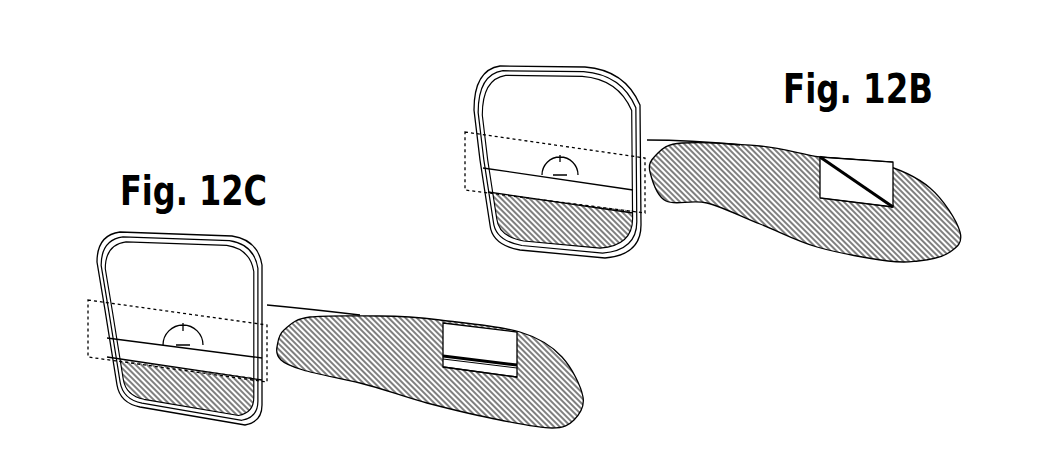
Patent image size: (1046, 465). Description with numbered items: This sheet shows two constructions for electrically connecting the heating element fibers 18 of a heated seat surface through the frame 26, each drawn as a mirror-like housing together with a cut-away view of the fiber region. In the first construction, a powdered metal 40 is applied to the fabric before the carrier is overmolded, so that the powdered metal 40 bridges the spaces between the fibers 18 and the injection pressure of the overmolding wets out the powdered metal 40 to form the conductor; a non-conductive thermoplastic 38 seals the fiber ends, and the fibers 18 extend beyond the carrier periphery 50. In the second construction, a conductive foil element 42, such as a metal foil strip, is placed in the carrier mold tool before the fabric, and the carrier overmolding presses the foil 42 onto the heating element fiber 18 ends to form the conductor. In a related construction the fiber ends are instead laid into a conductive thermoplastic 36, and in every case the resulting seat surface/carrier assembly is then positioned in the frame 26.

In FIG. 12C, the heating element fibers 18 is at (447, 342).
In FIG. 12B, the heating element fibers 18 is at (840, 155).
In FIG. 12C, the frame 26 is at (574, 398).
In FIG. 12B, the frame 26 is at (937, 240).
In FIG. 12C, the conductive thermoplastic 36 is at (417, 0).
In FIG. 12C, the non-conductive thermoplastic 38 is at (487, 342).
In FIG. 12B, the non-conductive thermoplastic 38 is at (873, 178).
In FIG. 12B, the powdered metal 40 is at (870, 192).
In FIG. 12C, the conductive foil element 42 is at (455, 370).
In FIG. 12C, the carrier periphery 50 is at (98, 231).
In FIG. 12B, the carrier periphery 50 is at (637, 60).